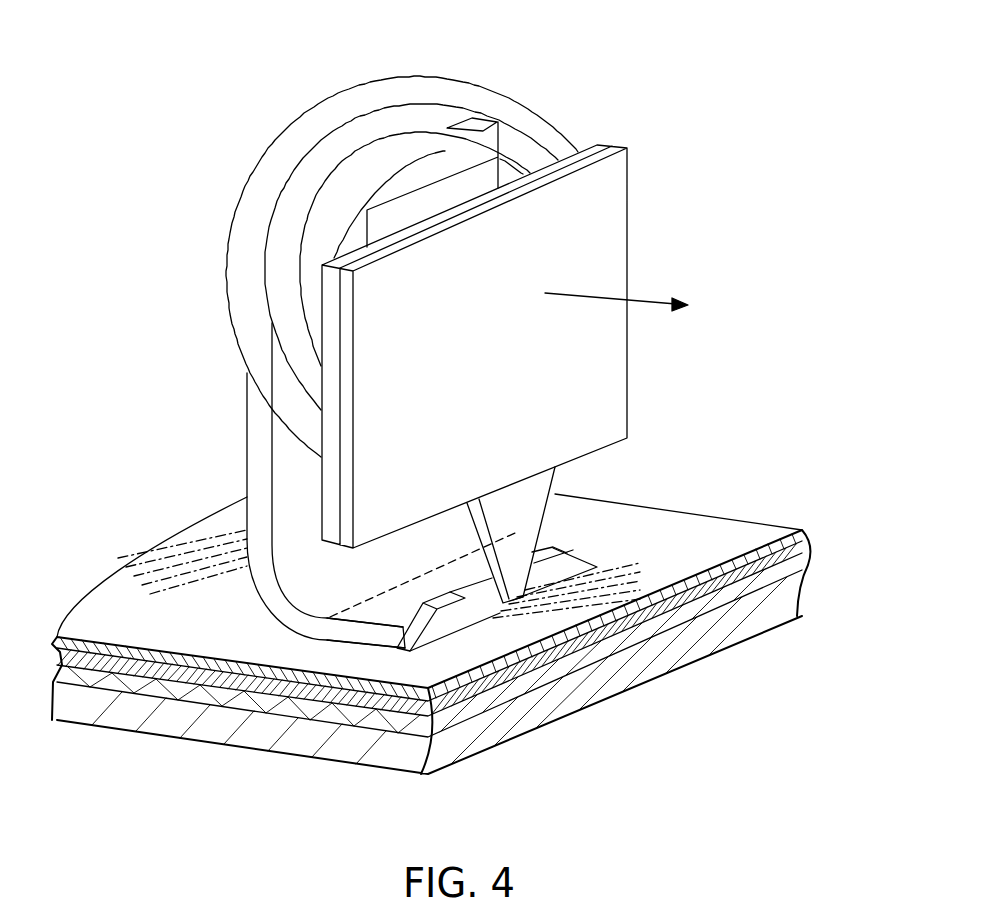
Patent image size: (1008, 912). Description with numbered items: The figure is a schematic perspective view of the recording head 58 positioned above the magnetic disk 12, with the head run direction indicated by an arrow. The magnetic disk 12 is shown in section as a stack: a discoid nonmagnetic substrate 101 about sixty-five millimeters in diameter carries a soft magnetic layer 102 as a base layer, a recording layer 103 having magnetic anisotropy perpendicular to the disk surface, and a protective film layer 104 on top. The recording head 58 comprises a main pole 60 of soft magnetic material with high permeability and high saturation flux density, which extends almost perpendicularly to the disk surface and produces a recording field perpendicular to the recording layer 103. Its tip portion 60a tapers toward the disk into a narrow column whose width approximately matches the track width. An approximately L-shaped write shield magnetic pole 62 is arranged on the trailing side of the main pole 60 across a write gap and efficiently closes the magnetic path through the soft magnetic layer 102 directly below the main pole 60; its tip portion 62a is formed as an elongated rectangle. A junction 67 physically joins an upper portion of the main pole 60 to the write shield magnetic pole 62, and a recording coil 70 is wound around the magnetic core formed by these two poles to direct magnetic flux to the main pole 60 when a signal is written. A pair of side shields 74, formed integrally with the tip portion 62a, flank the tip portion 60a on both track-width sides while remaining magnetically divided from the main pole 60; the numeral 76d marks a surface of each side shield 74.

The recording medium 12 is at (820, 517).
The base layer 101 is at (690, 632).
The intermediate layer 102 is at (740, 622).
The recording layer 103 is at (762, 578).
The protective layer 104 is at (770, 537).
The head unit 58 is at (170, 103).
The head plate 60 is at (603, 388).
The head tip 60a is at (527, 525).
The support arm 62 is at (250, 440).
The arm foot 62a is at (373, 613).
The magnetic pole 67 is at (422, 203).
The ring coil 70 is at (433, 140).
The contact strip 74 is at (447, 618).
The bent tab 76d is at (420, 620).